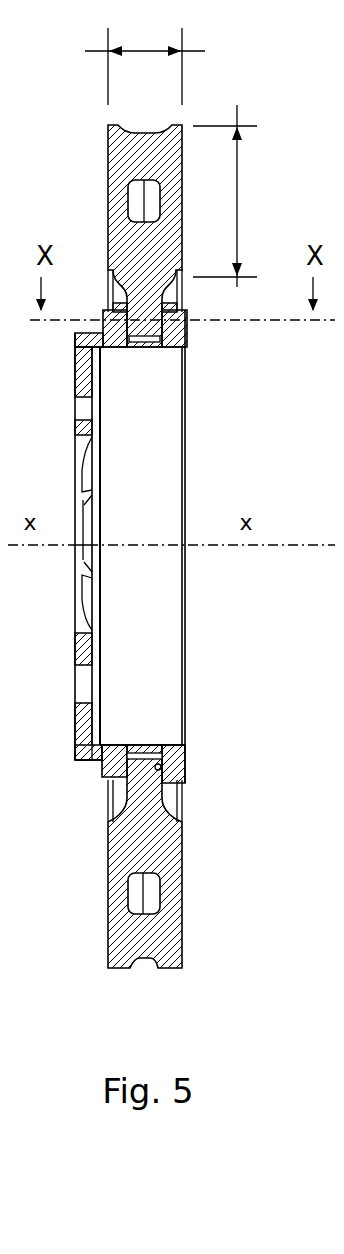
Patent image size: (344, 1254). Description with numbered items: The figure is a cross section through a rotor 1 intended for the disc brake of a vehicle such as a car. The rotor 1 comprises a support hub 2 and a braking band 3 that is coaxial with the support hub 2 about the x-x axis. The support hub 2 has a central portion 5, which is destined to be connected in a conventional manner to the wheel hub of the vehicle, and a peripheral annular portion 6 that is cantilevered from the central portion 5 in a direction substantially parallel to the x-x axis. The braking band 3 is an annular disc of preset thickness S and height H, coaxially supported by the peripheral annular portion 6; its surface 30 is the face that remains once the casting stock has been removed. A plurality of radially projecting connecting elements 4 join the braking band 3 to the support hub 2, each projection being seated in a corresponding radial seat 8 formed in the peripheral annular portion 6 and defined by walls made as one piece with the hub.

The rotor 1 is at (238, 62).
The support hub 2 is at (160, 722).
The braking band 3 is at (108, 905).
The connecting element 4 is at (150, 343).
The central portion 5 is at (82, 720).
The peripheral annular portion 6 is at (180, 790).
The radial seat 8 is at (162, 760).
The surface of the braking band 30 is at (108, 220).